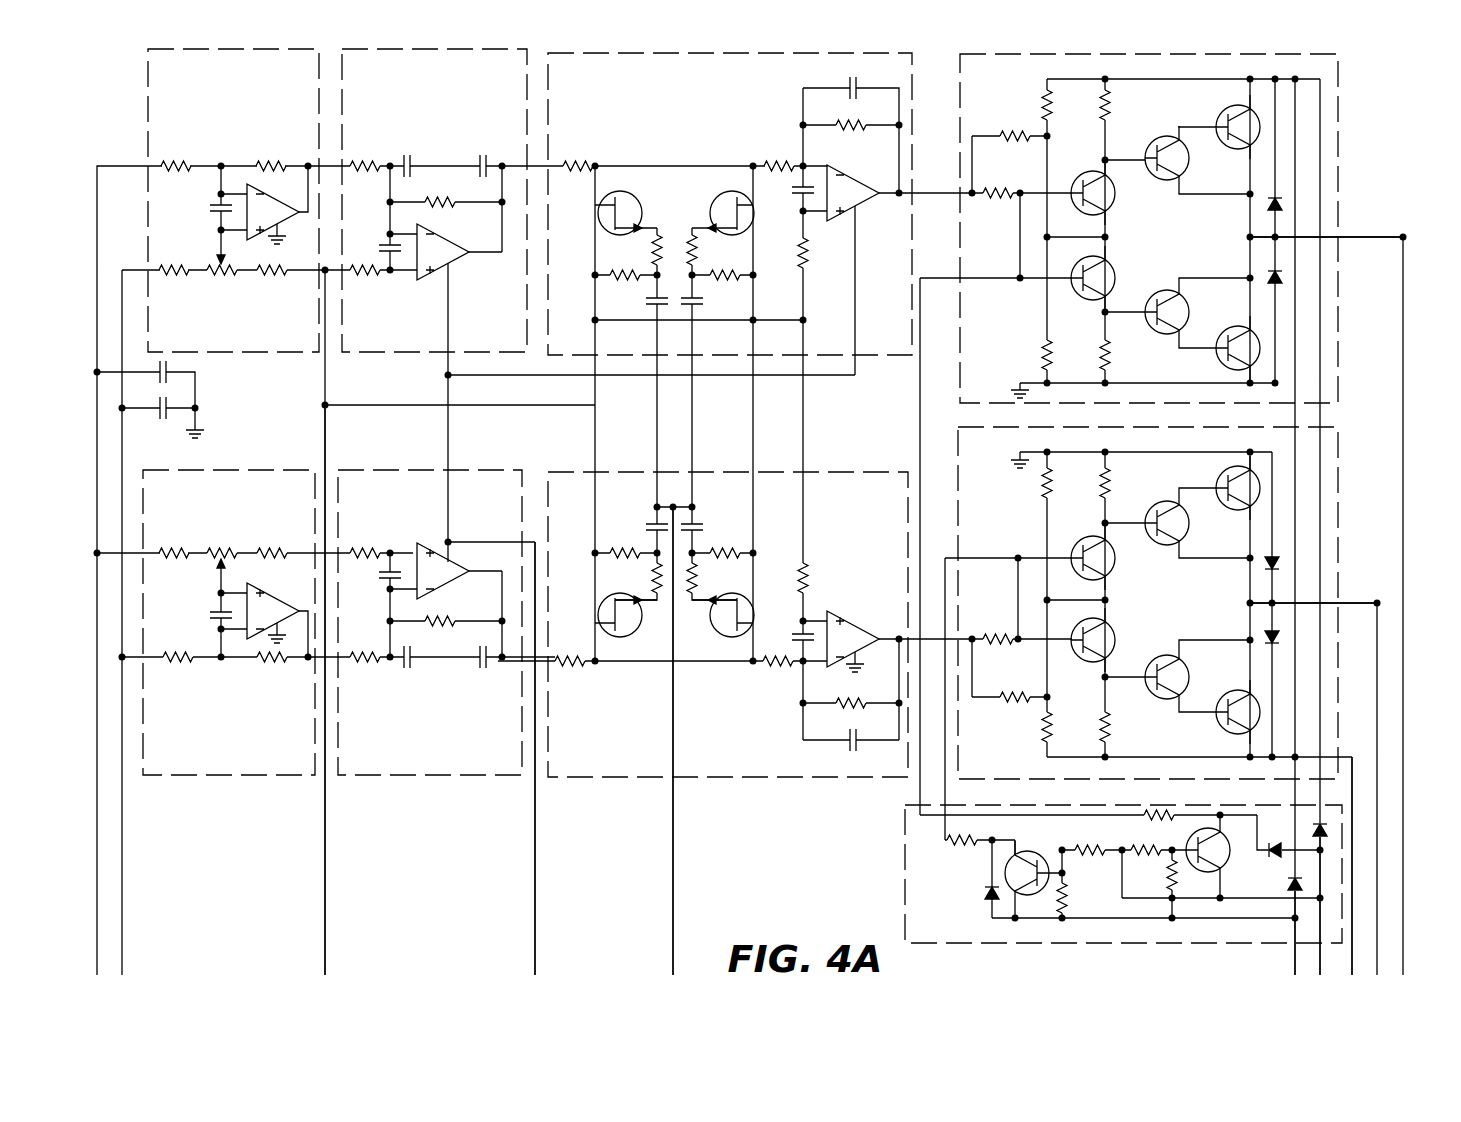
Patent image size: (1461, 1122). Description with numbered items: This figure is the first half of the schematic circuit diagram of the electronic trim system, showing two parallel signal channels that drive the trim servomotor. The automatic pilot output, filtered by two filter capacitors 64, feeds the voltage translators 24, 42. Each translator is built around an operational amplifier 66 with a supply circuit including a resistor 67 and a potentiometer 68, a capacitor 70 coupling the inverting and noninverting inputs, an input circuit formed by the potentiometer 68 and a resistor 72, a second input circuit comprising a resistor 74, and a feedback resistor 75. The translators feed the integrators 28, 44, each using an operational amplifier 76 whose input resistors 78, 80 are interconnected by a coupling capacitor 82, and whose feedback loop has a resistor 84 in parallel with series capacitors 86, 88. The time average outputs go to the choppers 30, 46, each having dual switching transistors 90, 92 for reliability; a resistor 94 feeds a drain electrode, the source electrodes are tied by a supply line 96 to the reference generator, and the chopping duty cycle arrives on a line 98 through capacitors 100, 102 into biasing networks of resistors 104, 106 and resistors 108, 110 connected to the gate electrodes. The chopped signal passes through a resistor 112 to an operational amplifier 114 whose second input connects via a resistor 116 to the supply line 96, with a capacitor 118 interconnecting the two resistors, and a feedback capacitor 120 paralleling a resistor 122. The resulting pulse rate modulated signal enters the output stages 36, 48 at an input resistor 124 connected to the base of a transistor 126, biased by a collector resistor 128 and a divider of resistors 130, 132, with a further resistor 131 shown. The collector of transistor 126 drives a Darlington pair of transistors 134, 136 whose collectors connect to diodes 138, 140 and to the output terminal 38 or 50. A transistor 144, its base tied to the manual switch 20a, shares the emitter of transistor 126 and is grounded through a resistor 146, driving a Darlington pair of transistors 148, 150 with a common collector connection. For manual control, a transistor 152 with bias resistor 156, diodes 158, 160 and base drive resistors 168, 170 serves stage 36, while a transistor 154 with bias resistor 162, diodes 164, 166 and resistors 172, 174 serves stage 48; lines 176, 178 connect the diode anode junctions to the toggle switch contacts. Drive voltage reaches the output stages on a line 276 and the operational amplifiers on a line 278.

The manual switch 20a is at (902, 882).
The voltage translator 24 is at (208, 89).
The integrator 28 is at (422, 89).
The chopper 30 is at (650, 89).
The output stage 36 is at (974, 85).
The output terminal 38 is at (1403, 237).
The voltage translator 42 is at (211, 502).
The integrator 44 is at (383, 502).
The chopper 46 is at (844, 507).
The output stage 48 is at (977, 505).
The output terminal 50 is at (1377, 601).
The filter capacitor 64 is at (170, 366).
The operational amplifier 66 is at (273, 204).
The resistor 67 is at (274, 276).
The potentiometer 68 is at (222, 276).
The capacitor 70 is at (210, 208).
The resistor 72 is at (170, 276).
The resistor 74 is at (176, 164).
The resistor 75 is at (272, 164).
The operational amplifier 76 is at (452, 246).
The resistor 78 is at (366, 164).
The resistor 80 is at (368, 276).
The coupling capacitor 82 is at (382, 244).
The resistor 84 is at (440, 200).
The capacitor 86 is at (408, 164).
The capacitor 88 is at (487, 162).
The switching transistor 90 is at (636, 198).
The switching transistor 92 is at (714, 198).
The resistor 94 is at (580, 164).
The supply line 96 is at (325, 940).
The line 98 is at (673, 940).
The capacitor 100 is at (651, 314).
The capacitor 102 is at (698, 314).
The resistor 104 is at (622, 277).
The resistor 106 is at (655, 252).
The resistor 108 is at (726, 281).
The resistor 110 is at (700, 252).
The resistor 112 is at (784, 162).
The operational amplifier 114 is at (872, 212).
The resistor 116 is at (810, 262).
The capacitor 118 is at (792, 194).
The capacitor 120 is at (844, 78).
The resistor 122 is at (858, 128).
The input resistor 124 is at (996, 184).
The transistor 126 is at (1114, 206).
The collector resistor 128 is at (1110, 104).
The resistor 130 is at (1052, 110).
The resistor 131 is at (1036, 354).
The resistor 132 is at (1002, 134).
The transistor 134 is at (1190, 162).
The transistor 136 is at (1234, 104).
The diode 138 is at (1268, 208).
The diode 140 is at (1266, 268).
The transistor 144 is at (1112, 260).
The resistor 146 is at (1112, 350).
The transistor 148 is at (1188, 312).
The transistor 150 is at (1218, 370).
The transistor 152 is at (1230, 870).
The transistor 154 is at (1038, 854).
The bias resistor 156 is at (1158, 808).
The diode 158 is at (1270, 836).
The diode 160 is at (1327, 832).
The bias resistor 162 is at (954, 846).
The diode 164 is at (982, 896).
The diode 166 is at (1302, 884).
The resistor 168 is at (1148, 848).
The resistor 170 is at (1168, 878).
The resistor 172 is at (1090, 848).
The resistor 174 is at (1068, 898).
The line 176 is at (1292, 962).
The line 178 is at (1322, 972).
The line 276 is at (1352, 948).
The line 278 is at (535, 940).